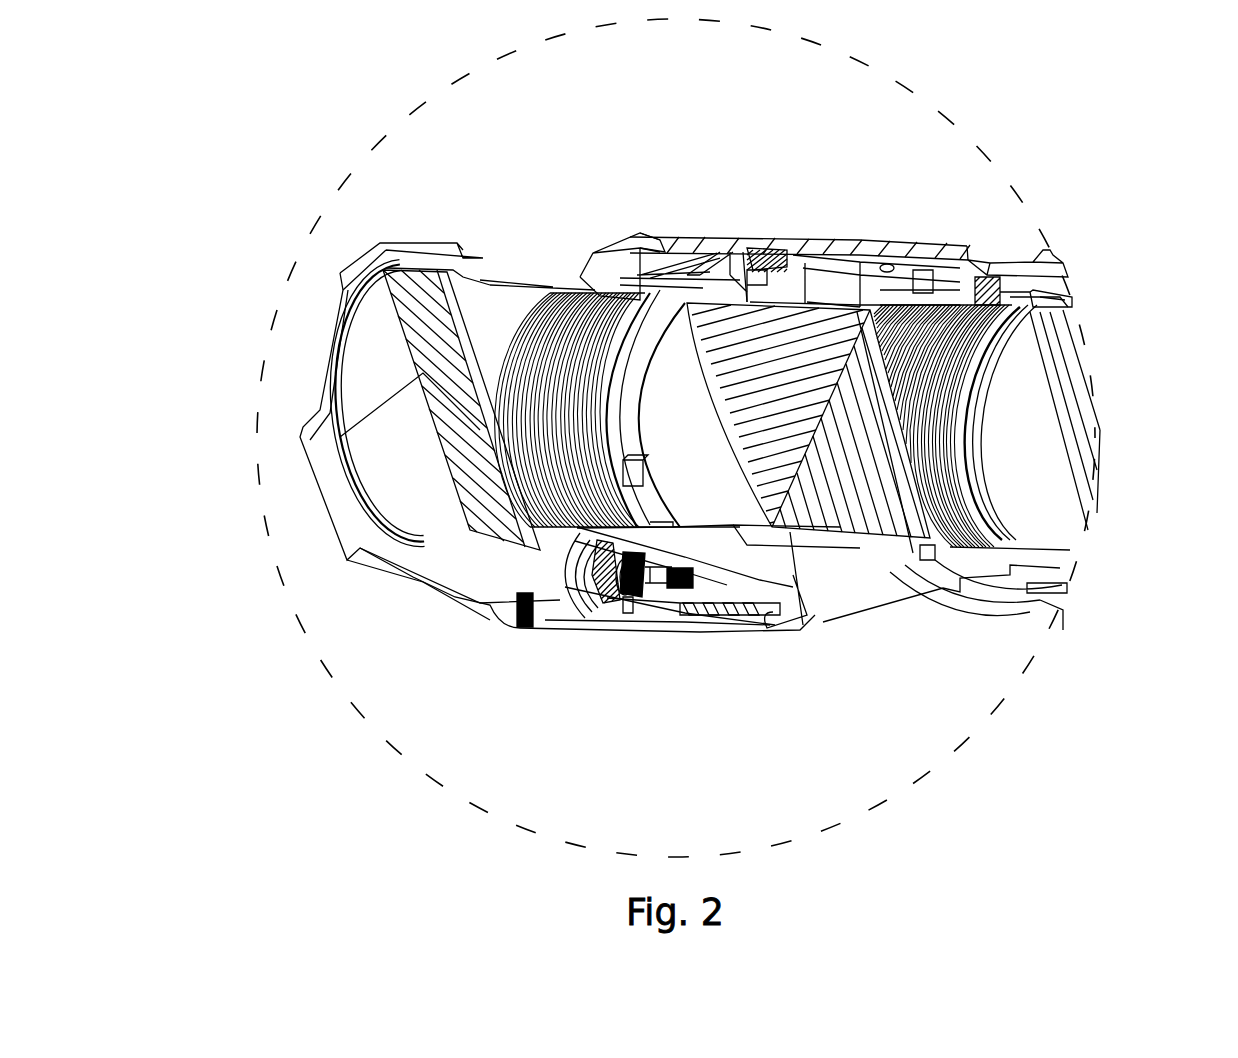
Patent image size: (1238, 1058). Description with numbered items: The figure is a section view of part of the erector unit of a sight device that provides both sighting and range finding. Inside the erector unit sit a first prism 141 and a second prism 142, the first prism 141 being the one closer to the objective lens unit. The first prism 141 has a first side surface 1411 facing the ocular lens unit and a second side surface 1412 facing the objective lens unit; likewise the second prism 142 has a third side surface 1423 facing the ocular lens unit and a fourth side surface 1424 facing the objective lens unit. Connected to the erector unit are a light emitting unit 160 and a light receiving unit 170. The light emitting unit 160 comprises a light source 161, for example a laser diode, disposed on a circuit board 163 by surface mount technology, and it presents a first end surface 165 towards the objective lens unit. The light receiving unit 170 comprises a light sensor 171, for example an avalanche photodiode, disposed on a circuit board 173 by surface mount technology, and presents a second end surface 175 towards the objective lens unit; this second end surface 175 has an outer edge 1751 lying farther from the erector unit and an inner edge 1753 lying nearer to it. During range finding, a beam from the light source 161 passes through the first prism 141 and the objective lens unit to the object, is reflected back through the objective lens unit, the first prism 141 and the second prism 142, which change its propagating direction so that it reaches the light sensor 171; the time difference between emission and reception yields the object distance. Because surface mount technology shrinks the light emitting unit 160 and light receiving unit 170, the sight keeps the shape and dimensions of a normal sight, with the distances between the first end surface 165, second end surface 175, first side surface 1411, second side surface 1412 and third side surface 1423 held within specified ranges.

The first prism 141 is at (490, 437).
The first side surface 1411 is at (456, 282).
The second side surface 1412 is at (407, 320).
The second prism 142 is at (1015, 496).
The third side surface 1423 is at (923, 467).
The fourth side surface 1424 is at (807, 447).
The light emitting unit 160 is at (702, 659).
The light source 161 is at (645, 594).
The circuit board 163 is at (713, 648).
The first end surface 165 is at (575, 600).
The light receiving unit 170 is at (846, 205).
The light sensor 171 is at (773, 243).
The circuit board 173 is at (896, 235).
The second end surface 175 is at (707, 240).
The outer edge 1751 is at (623, 253).
The inner edge 1753 is at (623, 250).